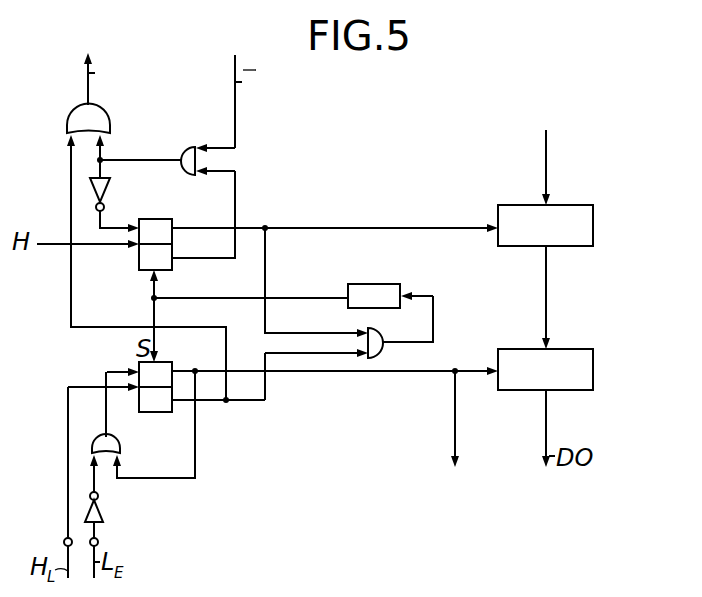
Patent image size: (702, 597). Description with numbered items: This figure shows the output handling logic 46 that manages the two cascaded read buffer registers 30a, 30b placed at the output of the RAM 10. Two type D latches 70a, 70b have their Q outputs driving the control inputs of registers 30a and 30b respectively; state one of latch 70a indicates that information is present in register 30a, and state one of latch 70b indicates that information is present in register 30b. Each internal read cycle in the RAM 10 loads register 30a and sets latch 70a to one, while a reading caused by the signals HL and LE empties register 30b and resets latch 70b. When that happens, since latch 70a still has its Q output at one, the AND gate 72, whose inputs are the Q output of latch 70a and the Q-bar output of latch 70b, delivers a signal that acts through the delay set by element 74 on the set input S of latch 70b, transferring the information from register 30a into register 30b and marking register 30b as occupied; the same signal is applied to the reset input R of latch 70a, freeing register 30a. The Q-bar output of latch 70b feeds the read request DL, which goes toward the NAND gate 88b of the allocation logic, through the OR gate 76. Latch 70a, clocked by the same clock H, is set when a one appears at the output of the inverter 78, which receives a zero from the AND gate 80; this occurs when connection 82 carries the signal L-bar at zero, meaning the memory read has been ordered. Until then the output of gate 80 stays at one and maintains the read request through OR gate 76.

The RAM 10 is at (548, 148).
The read buffer register 30a is at (575, 205).
The read buffer register 30b is at (573, 349).
The logic for managing the output registers 46 is at (287, 153).
The latch 70a is at (162, 214).
The latch 70b is at (160, 412).
The AND gate 72 is at (383, 339).
The delay element 74 is at (386, 275).
The OR gate 76 is at (72, 118).
The inverter 78 is at (108, 188).
The AND gate 80 is at (183, 146).
The connection 82 is at (235, 71).
The NAND gate 88b is at (98, 66).